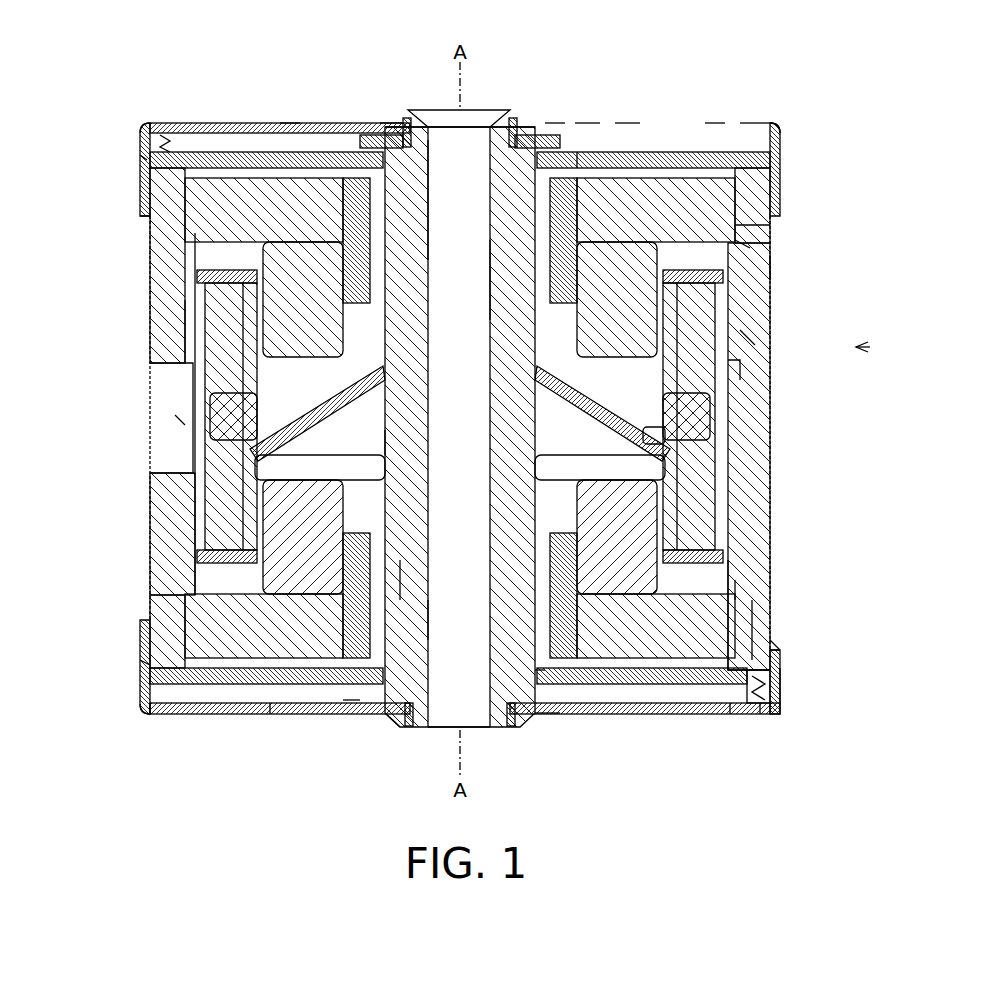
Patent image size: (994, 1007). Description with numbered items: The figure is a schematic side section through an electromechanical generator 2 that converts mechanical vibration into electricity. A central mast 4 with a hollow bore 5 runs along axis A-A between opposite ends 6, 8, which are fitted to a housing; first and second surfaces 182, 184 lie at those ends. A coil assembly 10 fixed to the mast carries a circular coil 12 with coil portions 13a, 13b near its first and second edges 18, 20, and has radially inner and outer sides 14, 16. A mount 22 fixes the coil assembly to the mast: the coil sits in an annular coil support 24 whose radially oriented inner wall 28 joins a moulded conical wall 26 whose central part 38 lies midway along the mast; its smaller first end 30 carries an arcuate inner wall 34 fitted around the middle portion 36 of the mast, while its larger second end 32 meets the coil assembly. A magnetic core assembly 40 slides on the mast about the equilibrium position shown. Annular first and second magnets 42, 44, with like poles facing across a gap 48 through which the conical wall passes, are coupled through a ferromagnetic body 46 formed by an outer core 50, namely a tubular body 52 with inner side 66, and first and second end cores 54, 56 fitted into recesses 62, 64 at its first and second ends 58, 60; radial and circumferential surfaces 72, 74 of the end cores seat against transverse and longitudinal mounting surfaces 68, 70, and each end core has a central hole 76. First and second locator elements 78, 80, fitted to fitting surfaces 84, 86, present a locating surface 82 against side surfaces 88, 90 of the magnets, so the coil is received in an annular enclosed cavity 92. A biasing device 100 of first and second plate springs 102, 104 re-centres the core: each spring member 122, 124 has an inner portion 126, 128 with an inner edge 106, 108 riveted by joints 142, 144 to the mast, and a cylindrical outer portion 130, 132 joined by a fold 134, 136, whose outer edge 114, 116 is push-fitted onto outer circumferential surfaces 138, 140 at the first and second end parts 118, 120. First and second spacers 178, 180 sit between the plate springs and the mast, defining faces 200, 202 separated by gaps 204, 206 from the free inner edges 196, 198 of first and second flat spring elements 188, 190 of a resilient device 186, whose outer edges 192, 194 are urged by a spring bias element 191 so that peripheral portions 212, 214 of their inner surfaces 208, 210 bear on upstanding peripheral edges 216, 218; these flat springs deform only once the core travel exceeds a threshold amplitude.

The electromechanical generator 2 is at (870, 347).
The central mast 4 is at (520, 510).
The central hollow bore 5 is at (466, 127).
The first end of the mast 6 is at (502, 113).
The second end of the mast 8 is at (480, 728).
The coil assembly 10 is at (160, 300).
The electrically conductive coil 12 is at (752, 316).
The first coil portion 13a is at (742, 340).
The second coil portion 13b is at (712, 440).
The radially inner side 14 is at (733, 375).
The radially outer side 16 is at (715, 400).
The first edge 18 is at (662, 190).
The second edge 20 is at (723, 560).
The mount 22 is at (735, 505).
The annular coil support 24 is at (660, 468).
The conical wall 26 is at (340, 395).
The radially oriented inner wall 28 is at (665, 440).
The first end of the conical wall 30 is at (428, 378).
The second end of the conical wall 32 is at (290, 427).
The inner wall 34 is at (386, 440).
The middle portion of the mast 36 is at (400, 410).
The central part of the conical wall 38 is at (320, 408).
The magnetic core assembly 40 is at (265, 530).
The first magnet 42 is at (265, 262).
The second magnet 44 is at (240, 505).
The ferromagnetic body 46 is at (160, 596).
The gap 48 is at (340, 470).
The outer core 50 is at (165, 258).
The tubular body 52 is at (165, 337).
The first end core 54 is at (640, 160).
The second end core 56 is at (705, 660).
The first end of the outer core 58 is at (755, 226).
The second end of the outer core 60 is at (780, 640).
The recess 62 is at (771, 268).
The recess 64 is at (777, 600).
The inner side of the tubular body 66 is at (720, 290).
The transverse mounting surface 68 is at (773, 587).
The longitudinal mounting surface 70 is at (780, 618).
The radial surface 72 is at (762, 246).
The circumferential surface 74 is at (740, 206).
The central hole 76 is at (330, 658).
The first locator element 78 is at (280, 200).
The second locator element 80 is at (410, 590).
The locating surface 82 is at (550, 200).
The fitting surface 84 is at (489, 270).
The fitting surface 86 is at (555, 630).
The side surface 88 is at (250, 160).
The side surface 90 is at (345, 640).
The annular enclosed cavity 92 is at (213, 572).
The biasing device 100 is at (650, 714).
The first plate spring 102 is at (355, 135).
The second plate spring 104 is at (733, 715).
The inner edge 106 is at (527, 135).
The inner edge 108 is at (512, 716).
The outer edge 114 is at (143, 213).
The outer edge 116 is at (142, 632).
The first end part 118 is at (140, 196).
The second end part 120 is at (140, 662).
The spring member 122 is at (385, 122).
The spring member 124 is at (165, 715).
The inner portion 126 is at (716, 122).
The inner portion 128 is at (275, 714).
The cylindrical outer portion 130 is at (773, 134).
The cylindrical outer portion 132 is at (780, 693).
The fold 134 is at (766, 122).
The fold 136 is at (770, 717).
The outer circumferential surface 138 is at (777, 170).
The outer circumferential surface 140 is at (780, 657).
The riveted joint 142 is at (405, 118).
The riveted joint 144 is at (413, 726).
The first spacer 178 is at (556, 122).
The second spacer 180 is at (405, 714).
The first surface of the mast 182 is at (425, 118).
The second surface of the mast 184 is at (435, 625).
The resilient device 186 is at (290, 122).
The first flat spring element 188 is at (170, 123).
The second flat spring element 190 is at (225, 714).
The spring bias element 191 is at (787, 714).
The outer edge 192 is at (150, 140).
The outer edge 194 is at (783, 685).
The free inner edge 196 is at (590, 158).
The free inner edge 198 is at (537, 677).
The first face 200 is at (431, 205).
The second face 202 is at (555, 715).
The gap 204 is at (587, 122).
The gap 206 is at (355, 714).
The inner surface 208 is at (626, 122).
The inner surface 210 is at (600, 684).
The peripheral portion 212 is at (748, 122).
The peripheral portion 214 is at (762, 715).
The upstanding peripheral edge 216 is at (140, 158).
The upstanding peripheral edge 218 is at (160, 676).